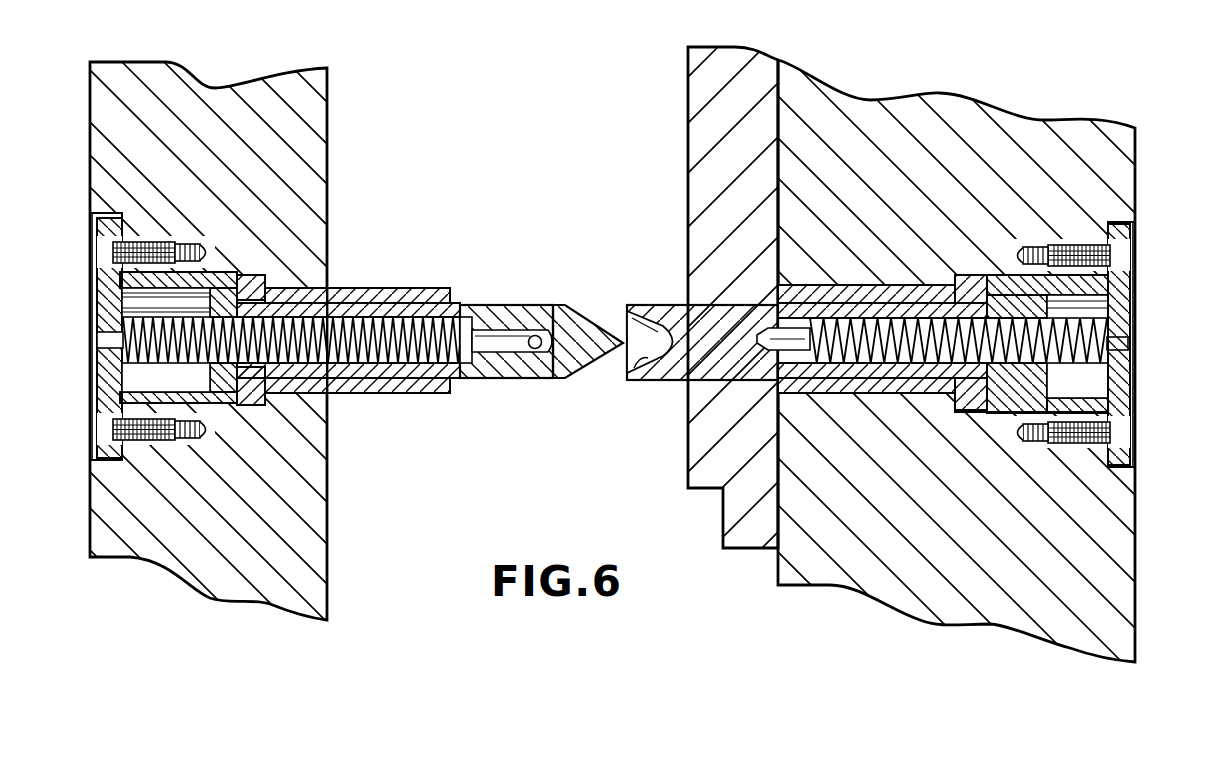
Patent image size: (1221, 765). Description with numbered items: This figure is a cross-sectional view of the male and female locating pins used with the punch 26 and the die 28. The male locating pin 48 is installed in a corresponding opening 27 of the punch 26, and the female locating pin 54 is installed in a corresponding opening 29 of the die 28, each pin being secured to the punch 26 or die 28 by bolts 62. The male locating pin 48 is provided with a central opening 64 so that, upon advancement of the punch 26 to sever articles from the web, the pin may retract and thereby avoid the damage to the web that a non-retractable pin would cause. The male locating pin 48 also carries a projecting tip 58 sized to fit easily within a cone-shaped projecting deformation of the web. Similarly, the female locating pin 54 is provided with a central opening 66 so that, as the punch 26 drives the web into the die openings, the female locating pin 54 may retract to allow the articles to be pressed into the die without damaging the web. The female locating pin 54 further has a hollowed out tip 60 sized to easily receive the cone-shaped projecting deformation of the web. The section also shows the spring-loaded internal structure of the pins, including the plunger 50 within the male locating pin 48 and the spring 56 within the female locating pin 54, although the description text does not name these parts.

The punch 26 is at (170, 68).
The opening 27 is at (90, 300).
The die 28 is at (930, 100).
The opening 29 is at (1135, 300).
The male locating pin 48 is at (350, 303).
The plunger 50 is at (362, 370).
The female locating pin 54 is at (845, 300).
The spring 56 is at (880, 368).
The projecting tip 58 is at (606, 372).
The hollowed out tip 60 is at (640, 362).
The bolts 62 is at (150, 245).
The central opening 64 is at (195, 305).
The central opening 66 is at (1100, 383).